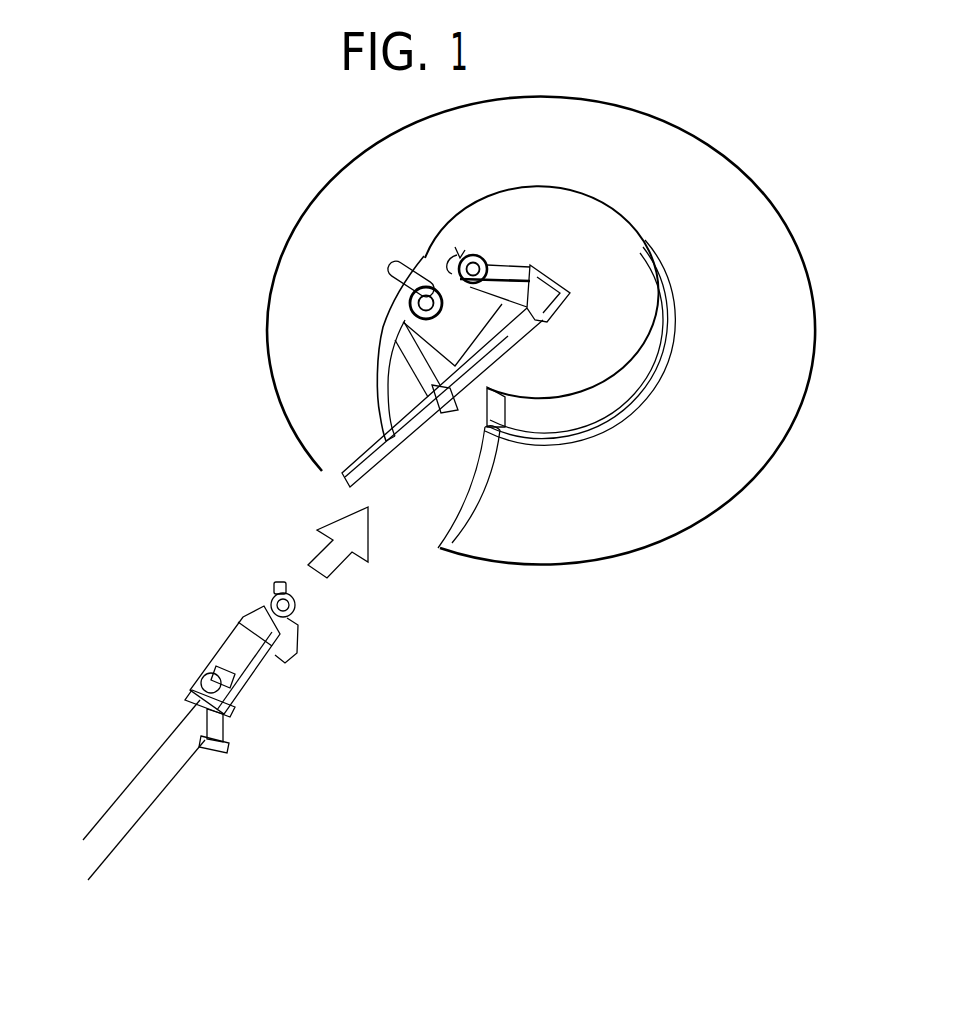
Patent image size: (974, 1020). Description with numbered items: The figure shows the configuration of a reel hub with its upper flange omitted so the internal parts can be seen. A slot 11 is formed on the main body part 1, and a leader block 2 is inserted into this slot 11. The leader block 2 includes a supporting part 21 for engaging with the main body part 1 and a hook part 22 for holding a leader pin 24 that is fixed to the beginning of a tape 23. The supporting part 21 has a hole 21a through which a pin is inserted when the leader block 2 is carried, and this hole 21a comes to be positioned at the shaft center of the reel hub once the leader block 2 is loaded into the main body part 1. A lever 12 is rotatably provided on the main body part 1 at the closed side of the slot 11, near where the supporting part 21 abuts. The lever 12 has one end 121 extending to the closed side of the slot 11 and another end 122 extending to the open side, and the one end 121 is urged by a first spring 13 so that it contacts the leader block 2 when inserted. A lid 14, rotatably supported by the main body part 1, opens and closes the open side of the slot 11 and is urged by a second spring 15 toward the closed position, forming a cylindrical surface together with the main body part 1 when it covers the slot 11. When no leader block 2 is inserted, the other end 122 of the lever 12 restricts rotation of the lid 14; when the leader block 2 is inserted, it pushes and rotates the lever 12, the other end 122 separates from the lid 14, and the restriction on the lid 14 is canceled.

The main body part 1 is at (545, 331).
The slot 11 is at (640, 364).
The lever 12 is at (680, 306).
The one end of the lever 121 is at (517, 350).
The other end of the lever 122 is at (387, 332).
The first spring 13 is at (462, 240).
The lid 14 is at (362, 299).
The second spring 15 is at (402, 302).
The leader block 2 is at (238, 703).
The supporting part 21 is at (299, 595).
The hole 21a is at (274, 588).
The hook part 22 is at (262, 695).
The tape 23 is at (142, 793).
The leader pin 24 is at (204, 676).